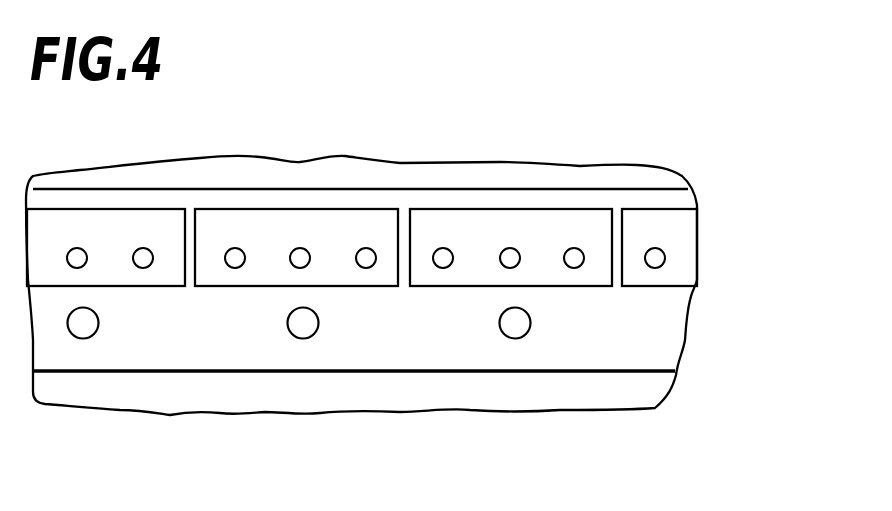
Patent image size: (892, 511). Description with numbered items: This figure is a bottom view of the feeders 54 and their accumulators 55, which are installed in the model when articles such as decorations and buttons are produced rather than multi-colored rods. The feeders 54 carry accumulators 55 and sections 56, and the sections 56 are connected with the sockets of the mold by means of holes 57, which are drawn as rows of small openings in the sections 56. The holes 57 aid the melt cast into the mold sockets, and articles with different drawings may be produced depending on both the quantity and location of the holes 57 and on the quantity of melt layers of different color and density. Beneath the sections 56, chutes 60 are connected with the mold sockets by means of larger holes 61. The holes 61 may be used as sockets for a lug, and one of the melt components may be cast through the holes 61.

The feeders 54 is at (564, 176).
The accumulators 55 is at (640, 397).
The sections 56 is at (596, 224).
The holes 57 is at (660, 258).
The chutes 60 is at (660, 358).
The holes 61 is at (527, 318).